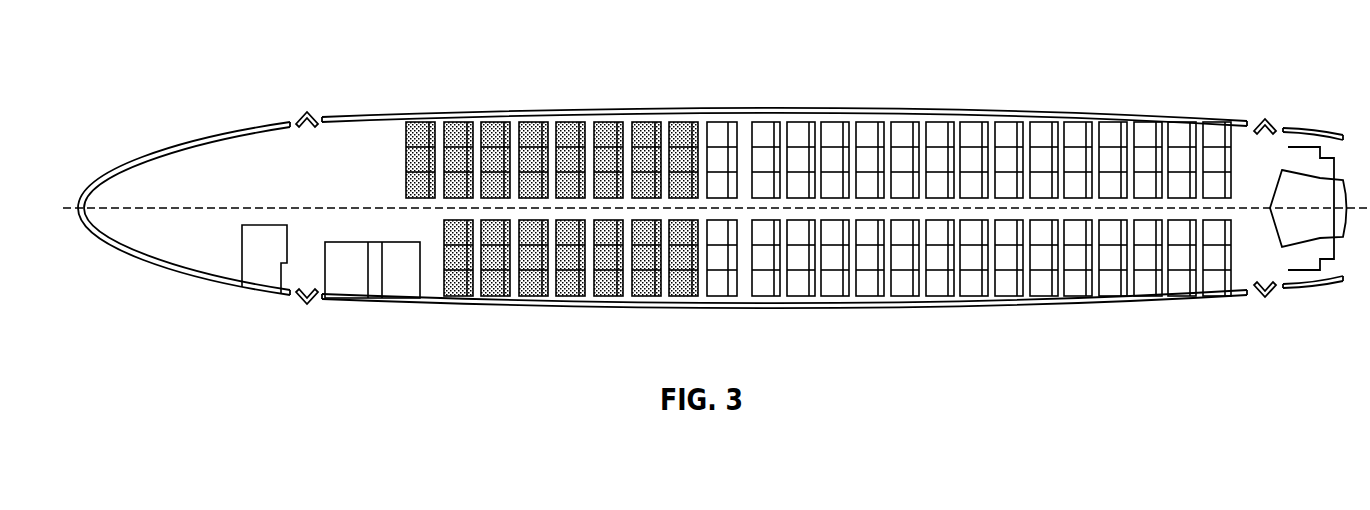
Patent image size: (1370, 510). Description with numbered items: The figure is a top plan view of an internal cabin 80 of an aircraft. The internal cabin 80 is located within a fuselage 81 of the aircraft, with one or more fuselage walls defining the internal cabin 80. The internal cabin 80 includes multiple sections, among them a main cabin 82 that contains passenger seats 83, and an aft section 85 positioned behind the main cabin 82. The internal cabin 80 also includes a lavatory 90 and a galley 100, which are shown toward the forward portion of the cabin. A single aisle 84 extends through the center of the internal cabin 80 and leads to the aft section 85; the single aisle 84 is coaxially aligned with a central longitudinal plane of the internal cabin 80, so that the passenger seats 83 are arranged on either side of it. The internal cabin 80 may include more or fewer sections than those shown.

The internal cabin 80 is at (322, 56).
The fuselage 81 is at (518, 113).
The main cabin 82 is at (457, 137).
The passenger seats 83 is at (722, 140).
The single aisle 84 is at (837, 203).
The aft section 85 is at (1252, 143).
The lavatory 90 is at (373, 270).
The galley 100 is at (260, 265).